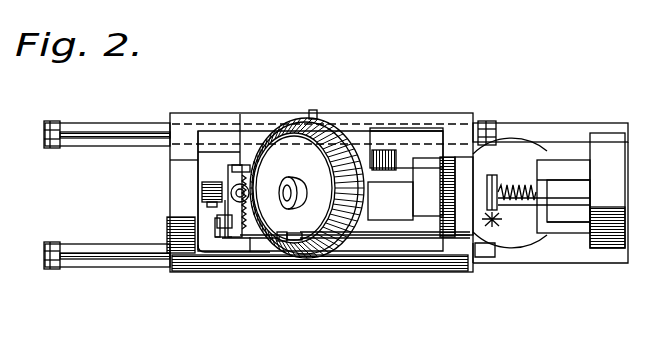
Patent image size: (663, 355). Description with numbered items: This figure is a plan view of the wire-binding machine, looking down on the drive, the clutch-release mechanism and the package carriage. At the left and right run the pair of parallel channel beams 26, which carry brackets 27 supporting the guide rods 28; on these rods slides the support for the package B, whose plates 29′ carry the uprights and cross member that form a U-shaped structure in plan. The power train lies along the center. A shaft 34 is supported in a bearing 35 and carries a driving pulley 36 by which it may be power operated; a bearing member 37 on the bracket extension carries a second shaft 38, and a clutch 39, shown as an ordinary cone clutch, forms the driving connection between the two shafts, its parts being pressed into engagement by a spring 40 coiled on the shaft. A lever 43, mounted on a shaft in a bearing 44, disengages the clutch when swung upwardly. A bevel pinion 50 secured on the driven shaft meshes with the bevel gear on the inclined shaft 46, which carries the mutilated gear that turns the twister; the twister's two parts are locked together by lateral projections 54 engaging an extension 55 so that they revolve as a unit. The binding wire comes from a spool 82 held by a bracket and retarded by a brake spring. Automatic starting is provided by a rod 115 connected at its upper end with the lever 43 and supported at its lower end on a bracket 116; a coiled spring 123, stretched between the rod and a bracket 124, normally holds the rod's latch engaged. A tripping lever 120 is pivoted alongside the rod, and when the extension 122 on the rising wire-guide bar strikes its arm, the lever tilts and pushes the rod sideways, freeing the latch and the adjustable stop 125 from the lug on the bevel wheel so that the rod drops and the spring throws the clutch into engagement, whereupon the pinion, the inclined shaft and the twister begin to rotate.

The channel beams 26 is at (537, 127).
The brackets 27 is at (57, 128).
The guide rods 28 is at (110, 131).
The plates 29′ is at (393, 115).
The shaft 34 is at (524, 205).
The bearing 35 is at (565, 195).
The driving pulley 36 is at (606, 143).
The bearing member 37 is at (381, 160).
The shaft 38 is at (402, 203).
The clutch 39 is at (455, 176).
The spring 40 is at (505, 186).
The lever 43 is at (462, 270).
The bearing 44 is at (497, 228).
The inclined shaft 46 is at (297, 186).
The bevel pinion 50 is at (392, 240).
The lateral projections 54 is at (250, 190).
The extension 55 is at (217, 222).
The spool 82 is at (202, 184).
The rod 115 is at (260, 240).
The bracket 116 is at (251, 240).
The tripping lever 120 is at (226, 210).
The extension 122 is at (200, 236).
The coiled spring 123 is at (198, 160).
The bracket 124 is at (240, 160).
The stop 125 is at (290, 240).
The package B is at (397, 252).